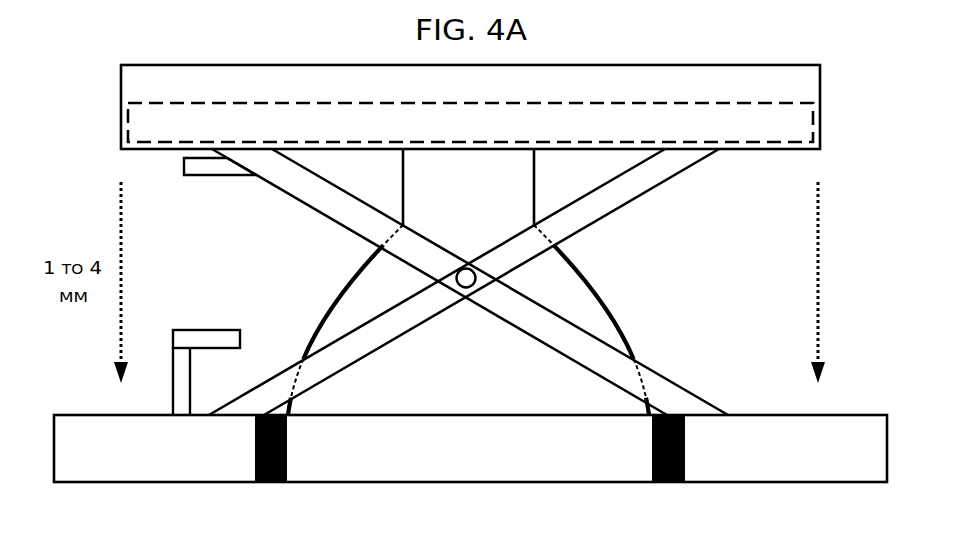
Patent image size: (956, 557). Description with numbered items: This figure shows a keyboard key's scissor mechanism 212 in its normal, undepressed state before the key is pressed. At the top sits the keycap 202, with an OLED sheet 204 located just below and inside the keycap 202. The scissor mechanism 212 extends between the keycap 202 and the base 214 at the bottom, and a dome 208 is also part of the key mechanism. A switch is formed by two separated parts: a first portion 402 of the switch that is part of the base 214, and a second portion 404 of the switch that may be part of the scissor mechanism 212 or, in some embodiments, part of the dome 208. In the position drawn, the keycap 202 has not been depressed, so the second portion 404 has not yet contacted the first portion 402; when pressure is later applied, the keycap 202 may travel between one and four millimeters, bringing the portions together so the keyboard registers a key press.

The keycap 202 is at (488, 96).
The OLED sheet 204 is at (488, 134).
The dome 208 is at (603, 297).
The scissor mechanism 212 is at (556, 347).
The base 214 is at (488, 458).
The first portion of the switch 402 is at (230, 330).
The second portion of the switch 404 is at (229, 175).